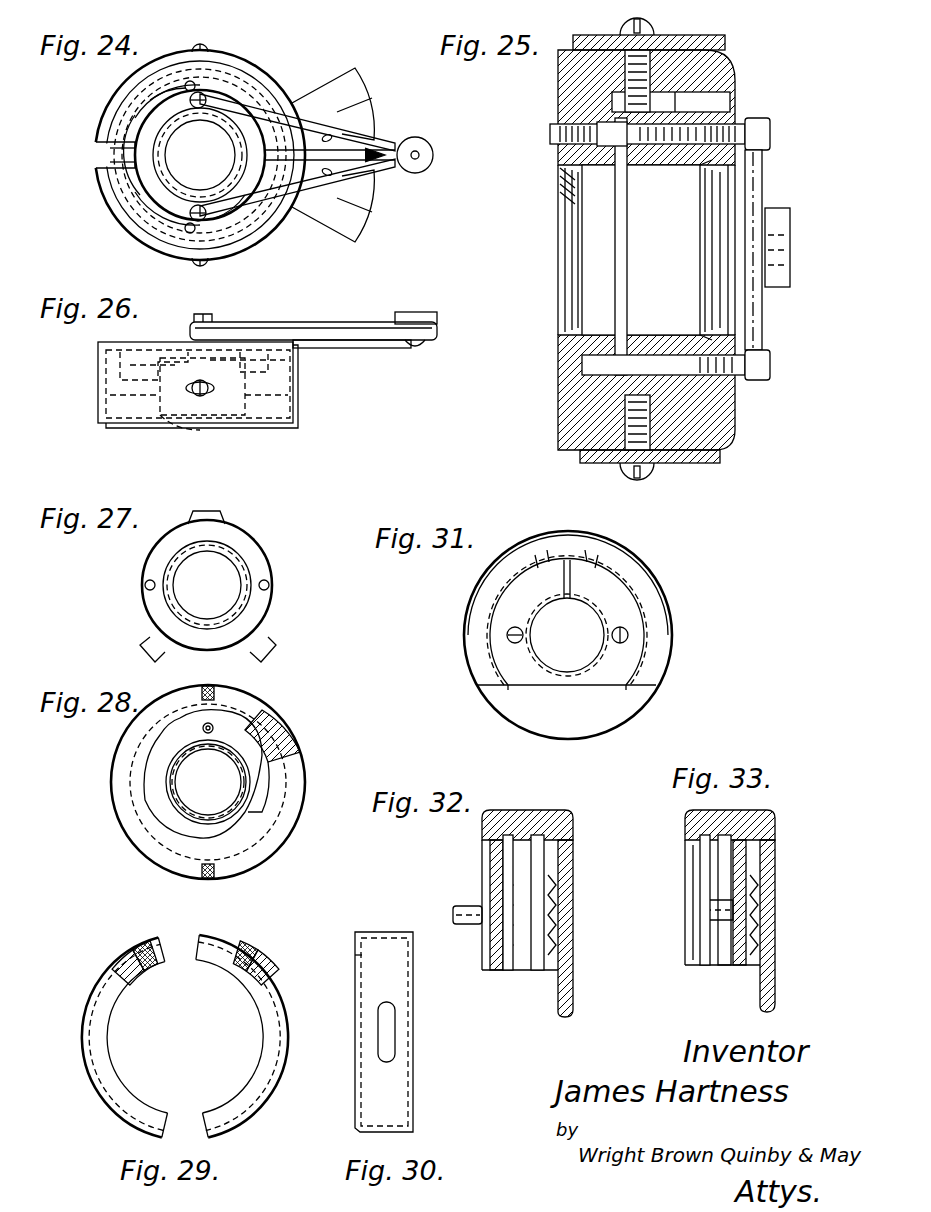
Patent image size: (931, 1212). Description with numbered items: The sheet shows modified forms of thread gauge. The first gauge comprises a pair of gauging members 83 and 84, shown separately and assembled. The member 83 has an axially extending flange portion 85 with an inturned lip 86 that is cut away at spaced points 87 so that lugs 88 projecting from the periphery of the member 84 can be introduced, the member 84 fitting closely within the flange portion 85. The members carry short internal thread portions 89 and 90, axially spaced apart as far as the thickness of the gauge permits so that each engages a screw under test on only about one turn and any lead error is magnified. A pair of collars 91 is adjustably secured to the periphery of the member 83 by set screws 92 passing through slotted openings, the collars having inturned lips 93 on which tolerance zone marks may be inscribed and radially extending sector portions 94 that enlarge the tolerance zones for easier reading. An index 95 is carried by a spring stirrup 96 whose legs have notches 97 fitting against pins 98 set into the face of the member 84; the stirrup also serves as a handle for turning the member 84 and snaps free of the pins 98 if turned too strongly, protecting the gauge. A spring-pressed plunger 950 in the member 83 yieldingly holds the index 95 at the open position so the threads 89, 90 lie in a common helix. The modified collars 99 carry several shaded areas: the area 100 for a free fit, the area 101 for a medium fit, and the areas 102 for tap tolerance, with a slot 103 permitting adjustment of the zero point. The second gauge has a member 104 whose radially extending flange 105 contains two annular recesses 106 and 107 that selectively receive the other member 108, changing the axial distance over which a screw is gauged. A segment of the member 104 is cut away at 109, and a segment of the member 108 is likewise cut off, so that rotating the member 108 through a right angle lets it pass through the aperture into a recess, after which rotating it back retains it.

In FIG. 24, the gauging member 83 is at (108, 156).
In FIG. 26, the gauging member 83 is at (300, 420).
In FIG. 25, the gauging member 83 is at (572, 80).
In FIG. 28, the gauging member 83 is at (306, 778).
In FIG. 24, the gauging member 84 is at (160, 192).
In FIG. 26, the gauging member 84 is at (276, 388).
In FIG. 25, the gauging member 84 is at (690, 340).
In FIG. 27, the gauging member 84 is at (236, 630).
In FIG. 25, the axially extending flange portion 85 is at (700, 70).
In FIG. 28, the axially extending flange portion 85 is at (282, 740).
In FIG. 28, the inturned lip 86 is at (278, 775).
In FIG. 24, the cut-away points 87 is at (140, 196).
In FIG. 25, the cut-away points 87 is at (705, 97).
In FIG. 28, the cut-away points 87 is at (232, 714).
In FIG. 25, the lugs 88 is at (630, 395).
In FIG. 27, the lugs 88 is at (214, 518).
In FIG. 26, the internal thread portion 89 is at (238, 428).
In FIG. 25, the internal thread portion 89 is at (568, 190).
In FIG. 28, the internal thread portion 89 is at (224, 752).
In FIG. 24, the internal thread portion 90 is at (181, 126).
In FIG. 26, the internal thread portion 90 is at (170, 352).
In FIG. 25, the internal thread portion 90 is at (708, 195).
In FIG. 27, the internal thread portion 90 is at (225, 558).
In FIG. 24, the collars 91 is at (100, 130).
In FIG. 26, the collars 91 is at (100, 386).
In FIG. 25, the collars 91 is at (700, 40).
In FIG. 24, the set screws 92 is at (208, 50).
In FIG. 26, the set screws 92 is at (200, 397).
In FIG. 25, the set screws 92 is at (625, 30).
In FIG. 24, the inturned lips 93 is at (132, 118).
In FIG. 25, the inturned lips 93 is at (728, 78).
In FIG. 24, the radially extending sector portion 94 is at (345, 90).
In FIG. 26, the radially extending sector portion 94 is at (345, 348).
In FIG. 24, the index 95 is at (392, 150).
In FIG. 26, the index 95 is at (418, 342).
In FIG. 25, the index 95 is at (782, 248).
In FIG. 24, the spring stirrup 96 is at (280, 208).
In FIG. 26, the spring stirrup 96 is at (333, 322).
In FIG. 25, the spring stirrup 96 is at (765, 177).
In FIG. 24, the notches 97 is at (195, 92).
In FIG. 24, the pins 98 is at (160, 105).
In FIG. 26, the pins 98 is at (196, 318).
In FIG. 25, the spring-pressed plunger 950 is at (588, 157).
In FIG. 29, the collars 99 is at (96, 1013).
In FIG. 30, the collars 99 is at (396, 981).
In FIG. 29, the area 100 is at (115, 966).
In FIG. 29, the area 101 is at (128, 980).
In FIG. 29, the areas 102 is at (140, 950).
In FIG. 30, the slot 103 is at (390, 1042).
In FIG. 31, the gauge member 104 is at (664, 592).
In FIG. 32, the gauge member 104 is at (574, 852).
In FIG. 33, the gauge member 104 is at (776, 862).
In FIG. 31, the radially extending flange 105 is at (648, 672).
In FIG. 32, the radially extending flange 105 is at (565, 828).
In FIG. 32, the annular recess 106 is at (538, 835).
In FIG. 33, the annular recess 106 is at (760, 812).
In FIG. 32, the annular recess 107 is at (506, 835).
In FIG. 33, the annular recess 107 is at (702, 840).
In FIG. 31, the gauge member 108 is at (522, 608).
In FIG. 32, the gauge member 108 is at (492, 858).
In FIG. 33, the gauge member 108 is at (738, 850).
In FIG. 31, the cut-away segment 109 is at (608, 710).
In FIG. 32, the cut-away segment 109 is at (562, 985).